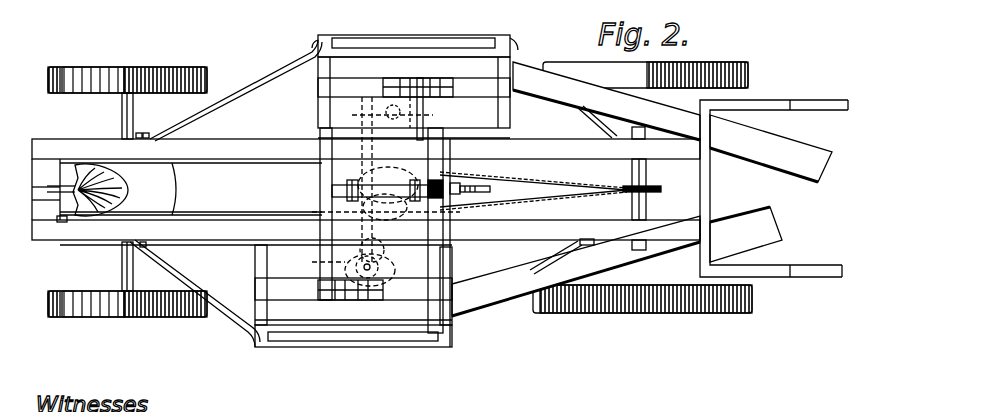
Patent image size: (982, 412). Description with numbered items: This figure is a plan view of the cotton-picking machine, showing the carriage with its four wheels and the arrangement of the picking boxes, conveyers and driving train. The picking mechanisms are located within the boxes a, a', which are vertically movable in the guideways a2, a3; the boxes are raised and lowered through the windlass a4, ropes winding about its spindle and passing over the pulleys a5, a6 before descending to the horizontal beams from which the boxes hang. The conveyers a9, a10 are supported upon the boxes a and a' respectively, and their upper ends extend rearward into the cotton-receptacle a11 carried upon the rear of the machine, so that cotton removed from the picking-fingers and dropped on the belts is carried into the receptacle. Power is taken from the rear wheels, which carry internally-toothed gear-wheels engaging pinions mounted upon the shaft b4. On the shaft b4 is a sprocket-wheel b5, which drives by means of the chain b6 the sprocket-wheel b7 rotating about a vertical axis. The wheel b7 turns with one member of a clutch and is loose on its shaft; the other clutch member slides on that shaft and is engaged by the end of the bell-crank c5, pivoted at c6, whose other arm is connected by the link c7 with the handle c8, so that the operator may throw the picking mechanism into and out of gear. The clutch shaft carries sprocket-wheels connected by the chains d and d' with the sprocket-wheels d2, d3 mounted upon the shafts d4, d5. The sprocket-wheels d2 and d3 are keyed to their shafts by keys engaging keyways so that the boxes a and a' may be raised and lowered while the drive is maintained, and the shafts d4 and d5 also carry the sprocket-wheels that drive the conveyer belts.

The box a is at (415, 31).
The box a' is at (353, 349).
The guideway a2 is at (262, 350).
The guideway a3 is at (449, 340).
The windlass a4 is at (426, 200).
The pulley a5 is at (358, 296).
The pulley a6 is at (425, 84).
The conveyer a9 is at (576, 266).
The conveyer a10 is at (606, 101).
The cotton-receptacle a11 is at (774, 188).
The shaft b4 is at (648, 178).
The sprocket-wheel b5 is at (660, 192).
The chain b6 is at (552, 196).
The sprocket-wheel b7 is at (337, 214).
The bell-crank c5 is at (385, 216).
The pivot c6 is at (372, 249).
The link c7 is at (258, 216).
The handle c8 is at (62, 218).
The chain d is at (371, 113).
The chain d' is at (386, 265).
The sprocket-wheel d2 is at (407, 112).
The sprocket-wheel d3 is at (367, 291).
The shaft d4 is at (388, 179).
The shaft d5 is at (346, 269).